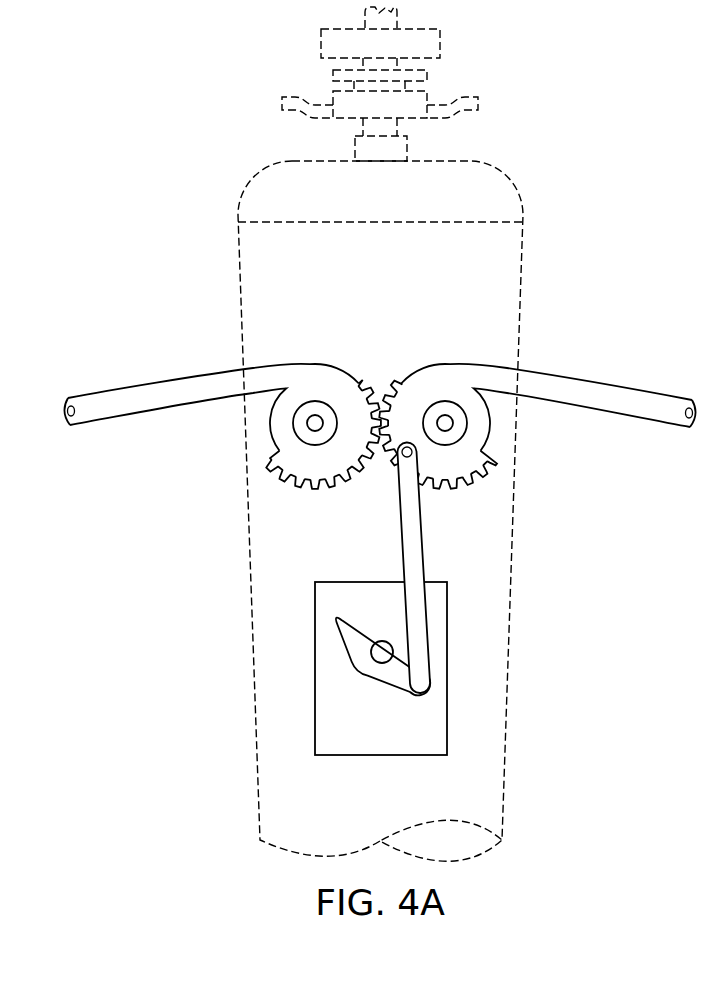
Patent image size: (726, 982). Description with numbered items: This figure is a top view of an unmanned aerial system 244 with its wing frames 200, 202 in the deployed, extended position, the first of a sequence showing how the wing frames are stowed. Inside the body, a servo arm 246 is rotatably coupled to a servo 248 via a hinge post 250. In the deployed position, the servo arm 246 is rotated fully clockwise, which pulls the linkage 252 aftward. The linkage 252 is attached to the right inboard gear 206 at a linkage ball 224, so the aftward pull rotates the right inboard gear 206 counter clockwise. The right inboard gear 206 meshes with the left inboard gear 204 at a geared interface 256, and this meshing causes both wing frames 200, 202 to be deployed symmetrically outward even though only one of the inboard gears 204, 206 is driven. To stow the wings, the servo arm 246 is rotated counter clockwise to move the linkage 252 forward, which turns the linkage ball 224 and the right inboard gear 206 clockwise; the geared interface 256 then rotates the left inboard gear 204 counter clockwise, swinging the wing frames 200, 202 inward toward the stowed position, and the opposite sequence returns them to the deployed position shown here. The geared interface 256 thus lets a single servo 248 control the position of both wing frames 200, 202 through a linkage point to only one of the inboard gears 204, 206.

The wing frame 200 is at (142, 395).
The wing frame 202 is at (620, 392).
The left inboard gear 204 is at (318, 372).
The right inboard gear 206 is at (445, 372).
The linkage ball 224 is at (399, 478).
The unmanned aerial system 244 is at (213, 150).
The servo arm 246 is at (390, 688).
The servo 248 is at (366, 756).
The hinge post 250 is at (372, 643).
The linkage 252 is at (422, 528).
The geared interface 256 is at (378, 360).